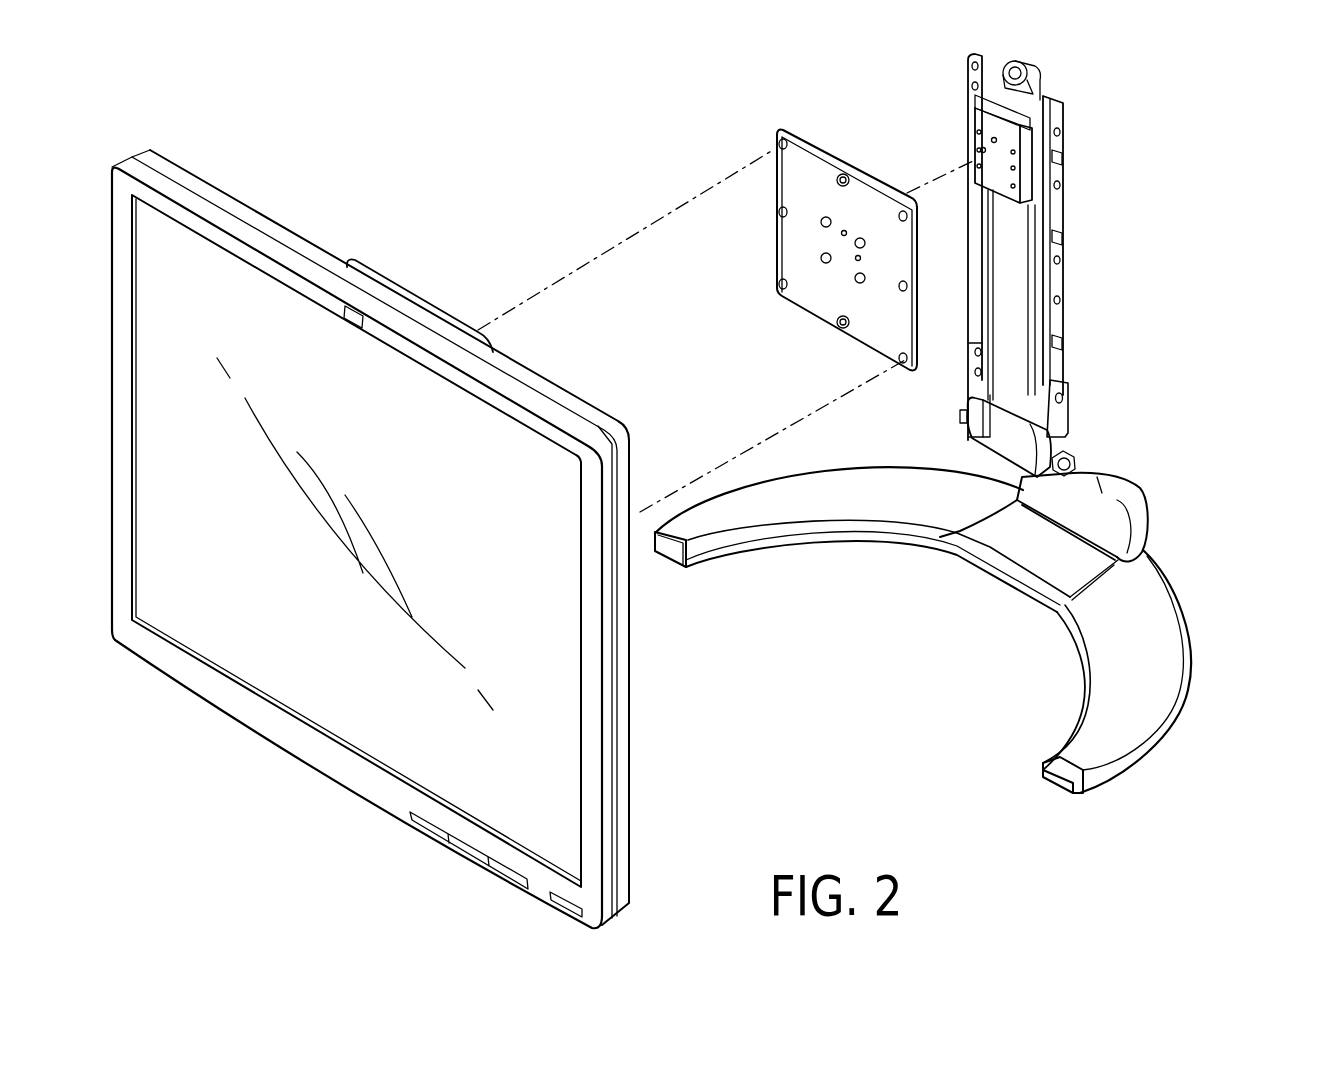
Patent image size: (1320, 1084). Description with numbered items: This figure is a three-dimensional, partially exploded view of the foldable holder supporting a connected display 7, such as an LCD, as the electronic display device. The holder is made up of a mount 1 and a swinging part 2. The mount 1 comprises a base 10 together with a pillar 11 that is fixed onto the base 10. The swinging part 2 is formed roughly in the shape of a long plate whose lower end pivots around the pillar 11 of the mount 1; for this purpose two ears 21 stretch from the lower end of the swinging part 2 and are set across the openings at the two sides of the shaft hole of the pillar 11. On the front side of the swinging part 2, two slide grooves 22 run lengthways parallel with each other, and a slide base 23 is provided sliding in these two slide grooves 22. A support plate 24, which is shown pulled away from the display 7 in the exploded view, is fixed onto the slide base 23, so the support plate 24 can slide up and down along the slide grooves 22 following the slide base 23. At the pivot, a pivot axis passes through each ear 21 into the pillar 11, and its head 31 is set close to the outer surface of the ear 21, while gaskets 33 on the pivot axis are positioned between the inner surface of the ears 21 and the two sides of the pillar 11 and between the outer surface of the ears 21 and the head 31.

The mount 1 is at (965, 631).
The swinging part 2 is at (1071, 265).
The display 7 is at (262, 204).
The base 10 is at (1160, 620).
The pillar 11 is at (1140, 503).
The ears 21 is at (1057, 443).
The slide grooves 22 is at (1030, 237).
The slide base 23 is at (1007, 140).
The support plate 24 is at (820, 172).
The head 31 is at (1072, 462).
The gaskets 33 is at (1067, 467).